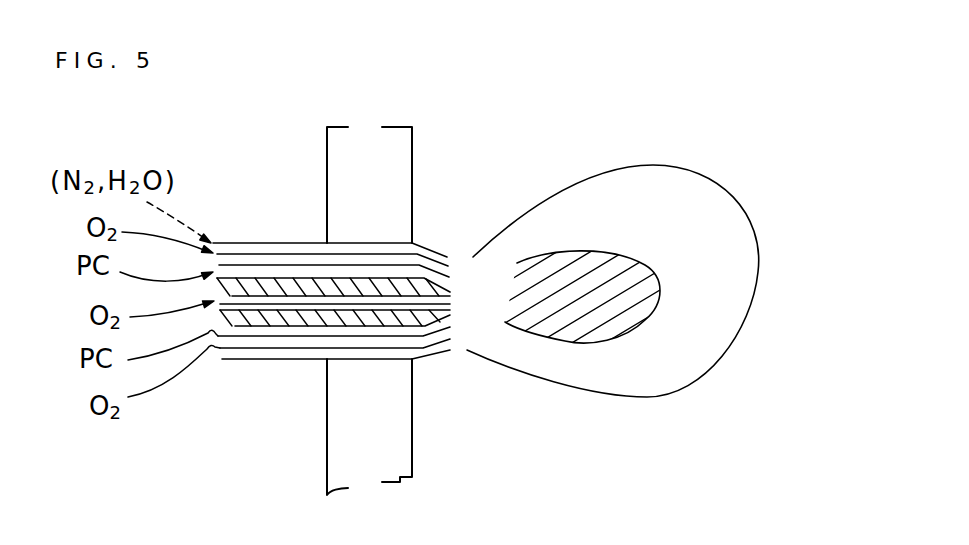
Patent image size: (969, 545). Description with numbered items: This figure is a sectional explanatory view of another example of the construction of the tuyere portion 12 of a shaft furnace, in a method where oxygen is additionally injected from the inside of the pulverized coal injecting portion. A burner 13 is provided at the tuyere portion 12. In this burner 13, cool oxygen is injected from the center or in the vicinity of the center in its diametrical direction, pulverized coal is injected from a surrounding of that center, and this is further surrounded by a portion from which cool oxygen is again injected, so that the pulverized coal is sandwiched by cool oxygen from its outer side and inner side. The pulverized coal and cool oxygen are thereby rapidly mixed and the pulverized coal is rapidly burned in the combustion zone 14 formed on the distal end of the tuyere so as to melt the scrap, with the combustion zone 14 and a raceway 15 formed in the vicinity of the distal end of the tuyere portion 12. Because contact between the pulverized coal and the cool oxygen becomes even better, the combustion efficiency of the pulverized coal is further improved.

The tuyere portion 12 is at (327, 454).
The burner 13 is at (262, 240).
The combustion zone 14 is at (562, 343).
The raceway 15 is at (552, 205).